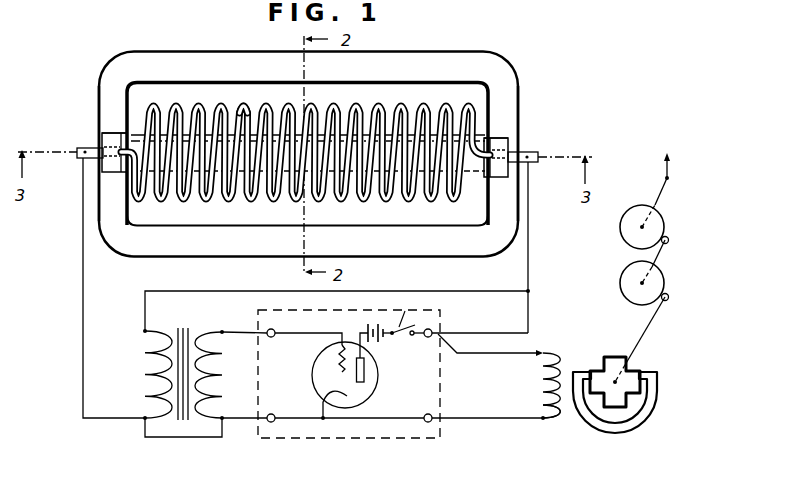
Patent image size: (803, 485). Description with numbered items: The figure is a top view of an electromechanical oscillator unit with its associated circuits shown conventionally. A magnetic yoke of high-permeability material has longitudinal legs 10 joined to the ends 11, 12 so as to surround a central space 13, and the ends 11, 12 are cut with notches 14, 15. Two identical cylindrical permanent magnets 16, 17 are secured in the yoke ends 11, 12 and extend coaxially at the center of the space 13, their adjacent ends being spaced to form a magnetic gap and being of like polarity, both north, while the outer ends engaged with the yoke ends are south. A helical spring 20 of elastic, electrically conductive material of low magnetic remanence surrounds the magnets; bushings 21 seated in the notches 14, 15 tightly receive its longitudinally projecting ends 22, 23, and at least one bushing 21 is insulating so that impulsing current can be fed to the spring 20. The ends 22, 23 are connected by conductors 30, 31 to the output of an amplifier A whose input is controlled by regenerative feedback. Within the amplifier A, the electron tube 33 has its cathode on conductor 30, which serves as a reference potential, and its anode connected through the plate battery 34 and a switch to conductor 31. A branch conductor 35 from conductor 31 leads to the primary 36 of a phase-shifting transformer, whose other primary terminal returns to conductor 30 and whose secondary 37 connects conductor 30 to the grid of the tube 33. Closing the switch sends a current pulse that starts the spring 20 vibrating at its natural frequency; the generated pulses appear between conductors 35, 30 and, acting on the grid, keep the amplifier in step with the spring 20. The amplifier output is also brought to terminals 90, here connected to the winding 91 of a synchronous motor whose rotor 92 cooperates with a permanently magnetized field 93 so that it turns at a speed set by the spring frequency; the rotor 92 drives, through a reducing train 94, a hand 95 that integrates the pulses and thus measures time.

The longitudinal legs 10 is at (200, 58).
The yoke end 11 is at (105, 96).
The yoke end 12 is at (505, 106).
The central space 13 is at (404, 96).
The notch 14 is at (110, 133).
The notch 15 is at (498, 138).
The permanent magnet 16 is at (238, 158).
The permanent magnet 17 is at (414, 171).
The helical spring 20 is at (245, 114).
The bushings 21 is at (110, 143).
The spring end 22 is at (85, 153).
The spring end 23 is at (528, 158).
The conductor 30 is at (82, 302).
The conductor 31 is at (529, 266).
The electron tube 33 is at (377, 386).
The plate battery 34 is at (386, 343).
The branch conductor 35 is at (500, 293).
The primary 36 is at (146, 347).
The secondary 37 is at (221, 386).
The terminals 90 is at (499, 376).
The winding 91 is at (560, 426).
The rotor 92 is at (613, 357).
The permanently magnetized field 93 is at (658, 397).
The reducing train 94 is at (662, 260).
The hand 95 is at (668, 166).
The amplifier A is at (308, 443).